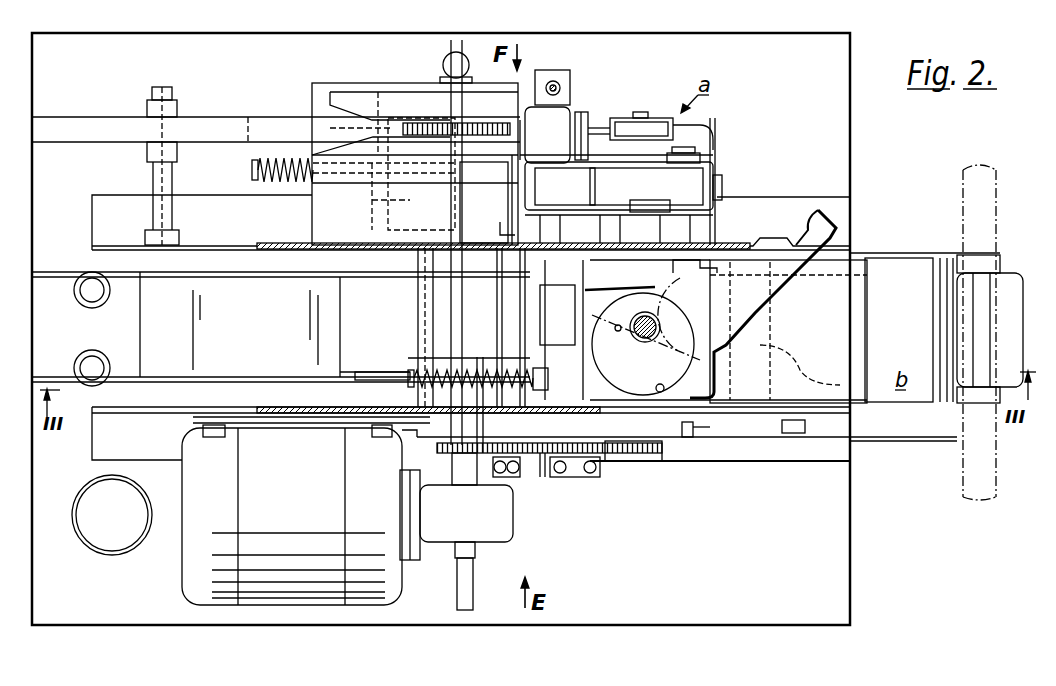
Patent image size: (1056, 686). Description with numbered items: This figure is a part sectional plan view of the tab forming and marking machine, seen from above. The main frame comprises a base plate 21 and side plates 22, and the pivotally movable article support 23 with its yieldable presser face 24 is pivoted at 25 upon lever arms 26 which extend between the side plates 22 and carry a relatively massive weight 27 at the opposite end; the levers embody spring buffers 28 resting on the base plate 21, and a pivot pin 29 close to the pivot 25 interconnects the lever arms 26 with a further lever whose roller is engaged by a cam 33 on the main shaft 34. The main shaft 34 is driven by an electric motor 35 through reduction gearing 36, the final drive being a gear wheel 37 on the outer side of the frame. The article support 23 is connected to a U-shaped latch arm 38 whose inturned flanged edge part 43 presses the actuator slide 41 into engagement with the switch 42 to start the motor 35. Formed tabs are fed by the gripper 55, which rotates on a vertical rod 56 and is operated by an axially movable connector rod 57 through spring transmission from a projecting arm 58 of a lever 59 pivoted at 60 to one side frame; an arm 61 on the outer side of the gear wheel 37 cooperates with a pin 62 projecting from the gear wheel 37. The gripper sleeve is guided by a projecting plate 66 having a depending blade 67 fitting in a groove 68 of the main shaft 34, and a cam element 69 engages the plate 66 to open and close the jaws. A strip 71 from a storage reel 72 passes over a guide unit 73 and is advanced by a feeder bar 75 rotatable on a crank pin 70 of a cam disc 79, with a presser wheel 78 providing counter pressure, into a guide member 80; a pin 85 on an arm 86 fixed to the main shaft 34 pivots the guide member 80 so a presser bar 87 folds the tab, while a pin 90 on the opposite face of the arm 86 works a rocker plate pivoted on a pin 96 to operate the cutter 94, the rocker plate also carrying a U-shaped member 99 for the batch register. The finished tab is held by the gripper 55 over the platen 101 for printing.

The base plate 21 is at (63, 490).
The side plates 22 is at (208, 244).
The article support 23 is at (1017, 273).
The yieldable presser face 24 is at (998, 290).
The pivot 25 is at (868, 282).
The lever arms 26 is at (390, 277).
The weight 27 is at (267, 340).
The spring buffers 28 is at (93, 293).
The pivot pin 29 is at (767, 325).
The cam 33 is at (520, 358).
The main shaft 34 is at (553, 330).
The electric motor 35 is at (295, 495).
The reduction gearing 36 is at (443, 532).
The gear wheel 37 is at (623, 455).
The latch arm 38 is at (878, 438).
The actuator slide 41 is at (705, 428).
The switch 42 is at (541, 463).
The inturned flanged edge part 43 is at (793, 430).
The gripper 55 is at (823, 223).
The vertical rod 56 is at (660, 320).
The connector rod 57 is at (600, 457).
The projecting arm 58 is at (437, 358).
The lever 59 is at (415, 437).
The pivot 60 is at (510, 477).
The projecting arm 61 is at (657, 462).
The pin 62 is at (560, 468).
The projecting plate 66 is at (553, 320).
The depending blade 67 is at (590, 240).
The groove 68 is at (553, 293).
The cam element 69 is at (587, 330).
The crank pin 70 is at (603, 128).
The strip 71 is at (305, 120).
The storage reel 72 is at (196, 120).
The guide unit 73 is at (322, 92).
The feeder bar 75 is at (372, 122).
The presser wheel 78 is at (452, 128).
The cam disc 79 is at (694, 152).
The guide member 80 is at (542, 118).
The pin 85 is at (642, 208).
The arm 86 is at (612, 220).
The presser bar 87 is at (586, 112).
The pin 90 is at (492, 222).
The cutter 94 is at (538, 122).
The pin 96 is at (372, 200).
The U-shaped member 99 is at (392, 215).
The platen 101 is at (658, 120).